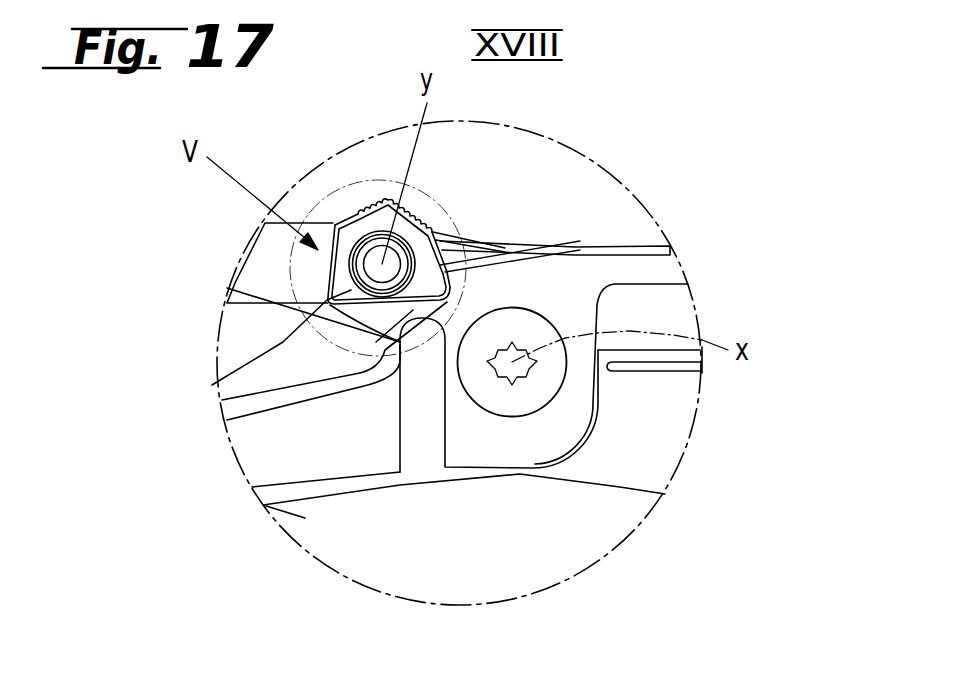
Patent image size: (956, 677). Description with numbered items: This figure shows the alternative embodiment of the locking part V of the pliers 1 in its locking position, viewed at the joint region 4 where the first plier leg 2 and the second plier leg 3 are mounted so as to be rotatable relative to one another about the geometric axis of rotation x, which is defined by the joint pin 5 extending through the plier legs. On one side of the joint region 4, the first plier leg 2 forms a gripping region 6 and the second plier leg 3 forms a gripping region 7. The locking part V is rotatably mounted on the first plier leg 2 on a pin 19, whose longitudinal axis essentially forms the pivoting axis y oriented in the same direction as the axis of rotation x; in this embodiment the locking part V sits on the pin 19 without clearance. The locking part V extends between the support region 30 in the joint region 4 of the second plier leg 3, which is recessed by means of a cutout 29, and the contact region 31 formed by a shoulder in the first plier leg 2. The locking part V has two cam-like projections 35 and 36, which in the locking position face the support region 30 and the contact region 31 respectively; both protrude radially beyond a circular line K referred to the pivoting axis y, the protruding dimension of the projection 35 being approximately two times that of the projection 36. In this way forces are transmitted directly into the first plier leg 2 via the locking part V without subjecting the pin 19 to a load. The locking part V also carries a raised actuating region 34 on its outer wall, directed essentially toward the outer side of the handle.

The pliers 1 is at (594, 133).
The first plier leg 2 is at (256, 282).
The second plier leg 3 is at (340, 452).
The joint region 4 is at (478, 298).
The joint pin 5 is at (522, 395).
The gripping region 6 is at (267, 250).
The gripping region 7 is at (280, 437).
The pin 19 is at (393, 275).
The cutout 29 is at (443, 297).
The support region 30 is at (462, 287).
The contact region 31 is at (330, 301).
The actuating region 34 is at (368, 208).
The cam-like projection 35 is at (450, 262).
The cam-like projection 36 is at (228, 389).